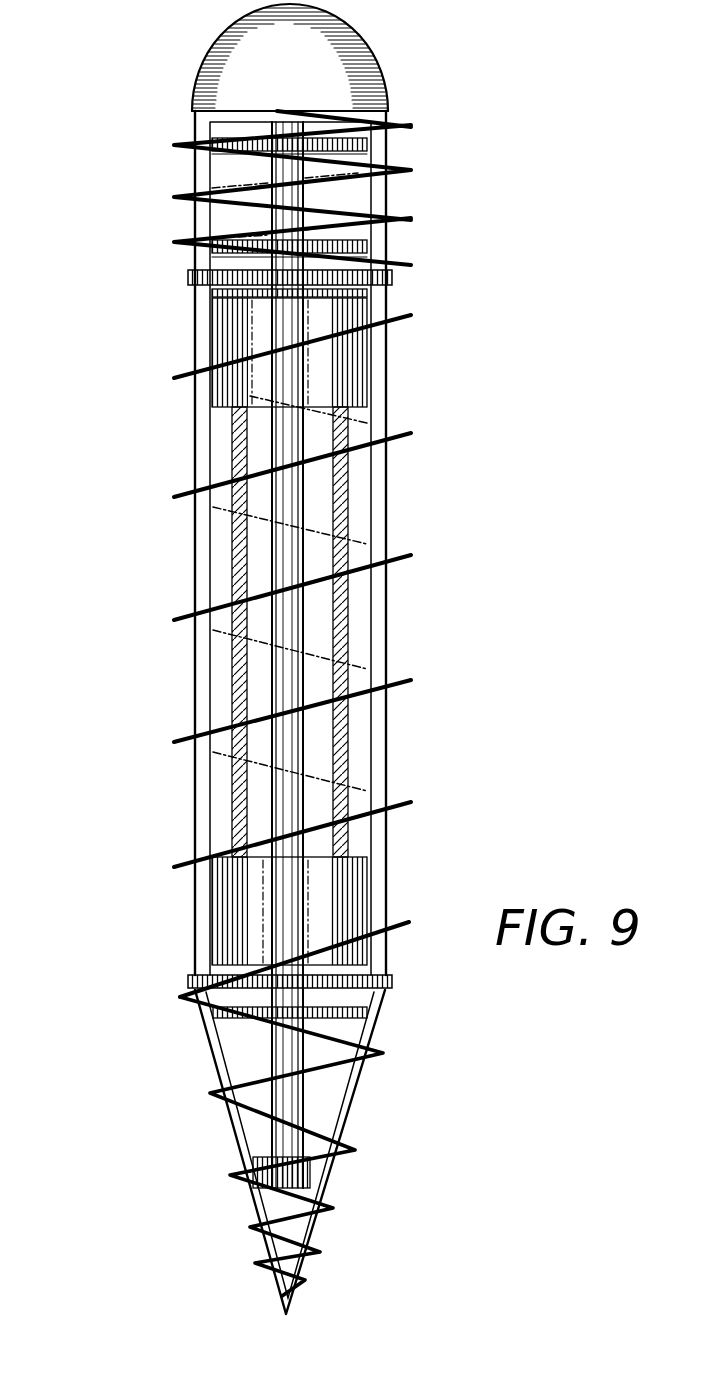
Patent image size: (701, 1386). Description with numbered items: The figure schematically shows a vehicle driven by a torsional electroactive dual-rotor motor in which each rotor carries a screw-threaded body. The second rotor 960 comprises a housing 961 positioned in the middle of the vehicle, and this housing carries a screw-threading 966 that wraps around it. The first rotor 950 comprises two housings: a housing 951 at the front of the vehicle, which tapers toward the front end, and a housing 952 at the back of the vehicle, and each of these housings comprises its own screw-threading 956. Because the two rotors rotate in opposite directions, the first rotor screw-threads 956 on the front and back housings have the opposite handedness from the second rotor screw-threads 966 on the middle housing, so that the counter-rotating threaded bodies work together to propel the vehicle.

The first rotor 950 is at (285, 1063).
The housing 951 is at (237, 1140).
The housing 952 is at (205, 176).
The screw-threading 956 is at (268, 249).
The second rotor 960 is at (262, 922).
The housing 961 is at (194, 440).
The screw-threading 966 is at (178, 621).